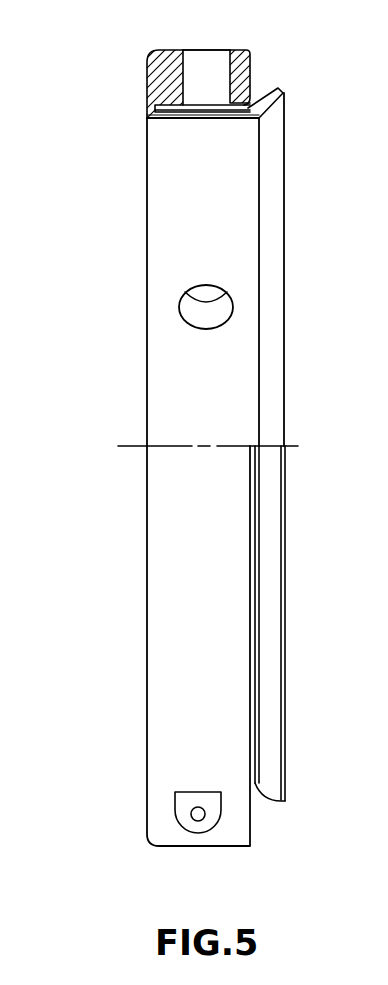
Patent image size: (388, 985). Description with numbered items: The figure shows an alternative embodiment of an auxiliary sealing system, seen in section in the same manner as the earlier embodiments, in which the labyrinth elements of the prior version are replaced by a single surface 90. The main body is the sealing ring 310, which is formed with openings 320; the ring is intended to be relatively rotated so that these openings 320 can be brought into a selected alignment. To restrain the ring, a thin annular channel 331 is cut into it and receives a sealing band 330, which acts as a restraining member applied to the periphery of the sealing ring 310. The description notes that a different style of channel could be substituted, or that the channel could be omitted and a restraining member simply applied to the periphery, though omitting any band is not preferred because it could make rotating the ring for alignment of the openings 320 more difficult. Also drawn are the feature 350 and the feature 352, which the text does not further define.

The single surface 90 is at (146, 65).
The sealing ring 310 is at (134, 245).
The openings 320 is at (230, 57).
The sealing band 330 is at (196, 103).
The thin annular channel 331 is at (241, 100).
The slot 350 is at (254, 51).
The flange 352 is at (280, 88).